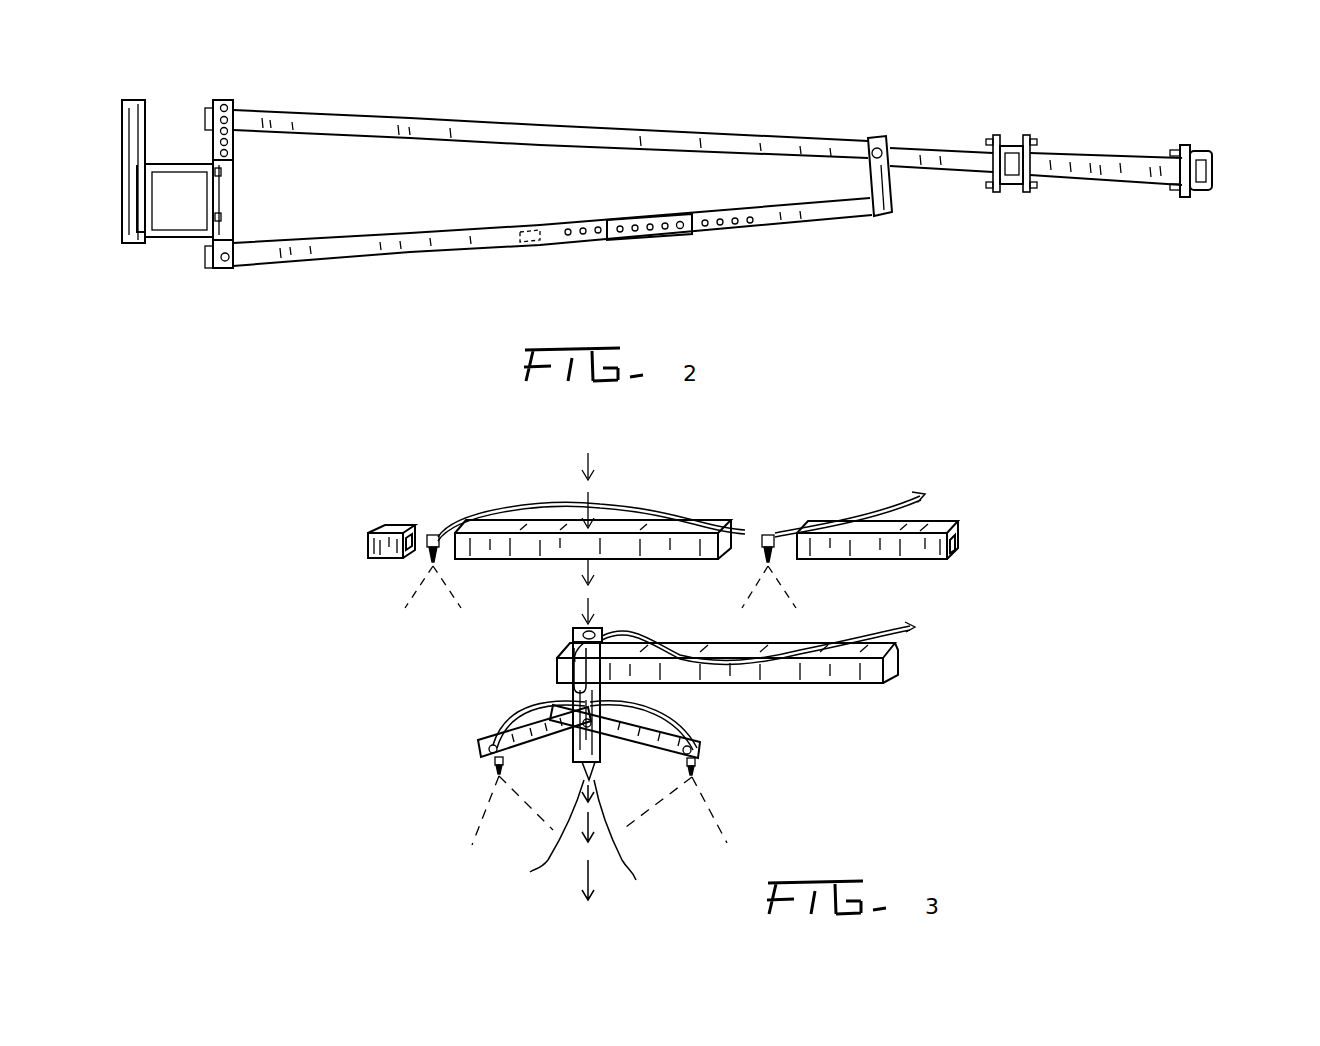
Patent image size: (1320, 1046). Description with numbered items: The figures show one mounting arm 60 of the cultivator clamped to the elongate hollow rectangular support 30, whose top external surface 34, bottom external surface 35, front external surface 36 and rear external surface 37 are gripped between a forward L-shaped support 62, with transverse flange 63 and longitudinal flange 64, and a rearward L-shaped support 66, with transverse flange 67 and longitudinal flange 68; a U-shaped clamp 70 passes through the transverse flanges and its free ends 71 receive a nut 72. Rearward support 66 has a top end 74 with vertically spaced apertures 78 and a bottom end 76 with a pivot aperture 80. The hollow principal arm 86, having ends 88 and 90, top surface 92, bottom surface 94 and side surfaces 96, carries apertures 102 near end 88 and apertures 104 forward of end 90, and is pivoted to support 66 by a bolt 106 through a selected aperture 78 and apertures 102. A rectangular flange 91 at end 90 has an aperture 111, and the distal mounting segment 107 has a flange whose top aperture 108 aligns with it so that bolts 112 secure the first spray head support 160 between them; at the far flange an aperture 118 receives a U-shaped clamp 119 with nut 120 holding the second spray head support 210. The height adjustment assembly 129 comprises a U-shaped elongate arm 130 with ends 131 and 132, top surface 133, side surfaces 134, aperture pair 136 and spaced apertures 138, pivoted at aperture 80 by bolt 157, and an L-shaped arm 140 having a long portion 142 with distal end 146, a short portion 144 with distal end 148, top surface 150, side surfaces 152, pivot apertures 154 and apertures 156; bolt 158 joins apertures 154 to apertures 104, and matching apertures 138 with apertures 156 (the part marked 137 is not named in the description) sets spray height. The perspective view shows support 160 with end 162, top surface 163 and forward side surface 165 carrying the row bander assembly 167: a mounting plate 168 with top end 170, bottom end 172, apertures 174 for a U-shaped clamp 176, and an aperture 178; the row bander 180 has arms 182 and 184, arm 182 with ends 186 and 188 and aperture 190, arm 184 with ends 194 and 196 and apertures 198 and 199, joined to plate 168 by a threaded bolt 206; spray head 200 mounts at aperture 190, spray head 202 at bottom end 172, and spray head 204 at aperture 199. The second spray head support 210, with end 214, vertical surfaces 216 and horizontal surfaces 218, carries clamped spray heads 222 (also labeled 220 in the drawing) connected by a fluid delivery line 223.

In FIG. 2, the elongate hollow rectangular support 30 is at (128, 207).
In FIG. 2, the top external surface 34 is at (175, 164).
In FIG. 2, the bottom external surface 35 is at (158, 238).
In FIG. 2, the front external surface 36 is at (137, 185).
In FIG. 2, the rear external surface 37 is at (242, 218).
In FIG. 2, the mounting arm 60 is at (627, 107).
In FIG. 2, the forward upstanding L-shaped support 62 is at (122, 108).
In FIG. 2, the transverse flange 63 is at (150, 100).
In FIG. 2, the longitudinal flange 64 is at (128, 225).
In FIG. 2, the rearward upstanding L-shaped support 66 is at (245, 200).
In FIG. 2, the transverse flange 67 is at (240, 160).
In FIG. 2, the longitudinal flange 68 is at (242, 190).
In FIG. 2, the U-shaped clamp 70 is at (180, 240).
In FIG. 2, the free ends 71 is at (245, 238).
In FIG. 2, the nut 72 is at (245, 176).
In FIG. 2, the top end 74 is at (225, 100).
In FIG. 2, the bottom end 76 is at (224, 268).
In FIG. 2, the vertically spaced apart apertures 78 is at (233, 110).
In FIG. 2, the pivot aperture 80 is at (235, 262).
In FIG. 2, the principal arm 86 is at (494, 118).
In FIG. 2, the end 88 is at (208, 115).
In FIG. 2, the end 90 is at (998, 160).
In FIG. 2, the rectangular flange 91 is at (996, 138).
In FIG. 2, the top surface 92 is at (430, 117).
In FIG. 2, the bottom surface 94 is at (405, 138).
In FIG. 2, the side surfaces 96 is at (568, 128).
In FIG. 2, the apertures 102 is at (230, 125).
In FIG. 2, the apertures 104 is at (890, 150).
In FIG. 2, the bolt 106 is at (245, 124).
In FIG. 2, the elongate distal mounting segment 107 is at (1105, 180).
In FIG. 2, the top aperture 108 is at (1032, 143).
In FIG. 2, the aperture 111 is at (998, 135).
In FIG. 2, the bolts 112 is at (1025, 138).
In FIG. 2, the aperture 118 is at (1195, 151).
In FIG. 2, the U-shaped clamp 119 is at (1215, 165).
In FIG. 2, the nut 120 is at (1176, 152).
In FIG. 2, the height adjustment assembly 129 is at (590, 268).
In FIG. 2, the U-shaped elongate arm 130 is at (478, 248).
In FIG. 2, the end 131 is at (210, 260).
In FIG. 2, the end 132 is at (680, 236).
In FIG. 2, the top surface 133 is at (395, 233).
In FIG. 2, the depending side surfaces 134 is at (395, 256).
In FIG. 2, the aperture pair 136 is at (240, 250).
In FIG. 2, the adjustment bolt 137 is at (650, 222).
In FIG. 2, the spaced apart apertures 138 is at (583, 228).
In FIG. 2, the L-shaped arm 140 is at (850, 218).
In FIG. 2, the long portion 142 is at (780, 210).
In FIG. 2, the short portion 144 is at (872, 190).
In FIG. 2, the distal end 146 is at (520, 232).
In FIG. 2, the distal end 148 is at (872, 138).
In FIG. 2, the top surface 150 is at (715, 219).
In FIG. 2, the side surfaces 152 is at (765, 224).
In FIG. 2, the pivot apertures 154 is at (868, 150).
In FIG. 2, the spaced apart apertures 156 is at (728, 228).
In FIG. 2, the bolt 157 is at (215, 265).
In FIG. 2, the bolt 158 is at (882, 150).
In FIG. 2, the first spray head support 160 is at (1035, 160).
In FIG. 3, the end 162 is at (573, 660).
In FIG. 3, the top surface 163 is at (905, 628).
In FIG. 3, the forward side surface 165 is at (880, 683).
In FIG. 3, the row bander and mounting assembly 167 is at (465, 672).
In FIG. 3, the mounting plate 168 is at (575, 633).
In FIG. 3, the top end 170 is at (590, 628).
In FIG. 3, the bottom end 172 is at (602, 800).
In FIG. 3, the apertures 174 is at (573, 640).
In FIG. 3, the U-shaped clamp 176 is at (572, 680).
In FIG. 3, the aperture 178 is at (605, 702).
In FIG. 3, the row bander 180 is at (468, 725).
In FIG. 3, the arm 182 is at (478, 745).
In FIG. 3, the arm 184 is at (690, 745).
In FIG. 3, the end 186 is at (495, 763).
In FIG. 3, the end 188 is at (655, 704).
In FIG. 3, the aperture 190 is at (489, 750).
In FIG. 3, the end 194 is at (533, 714).
In FIG. 3, the end 196 is at (705, 752).
In FIG. 3, the aperture 198 is at (601, 738).
In FIG. 3, the aperture 199 is at (697, 766).
In FIG. 3, the spray head 200 is at (496, 778).
In FIG. 3, the spray head 202 is at (565, 800).
In FIG. 3, the spray head 204 is at (698, 785).
In FIG. 3, the threaded bolt 206 is at (573, 738).
In FIG. 2, the second spray head support 210 is at (1212, 178).
In FIG. 3, the second spray head support 210 is at (650, 528).
In FIG. 3, the end 214 is at (368, 545).
In FIG. 3, the vertically disposed surfaces 216 is at (385, 559).
In FIG. 3, the horizontally disposed surfaces 218 is at (378, 528).
In FIG. 3, the spray nozzle 220 is at (431, 534).
In FIG. 3, the spray heads 222 is at (458, 518).
In FIG. 3, the fluid delivery line 223 is at (912, 494).